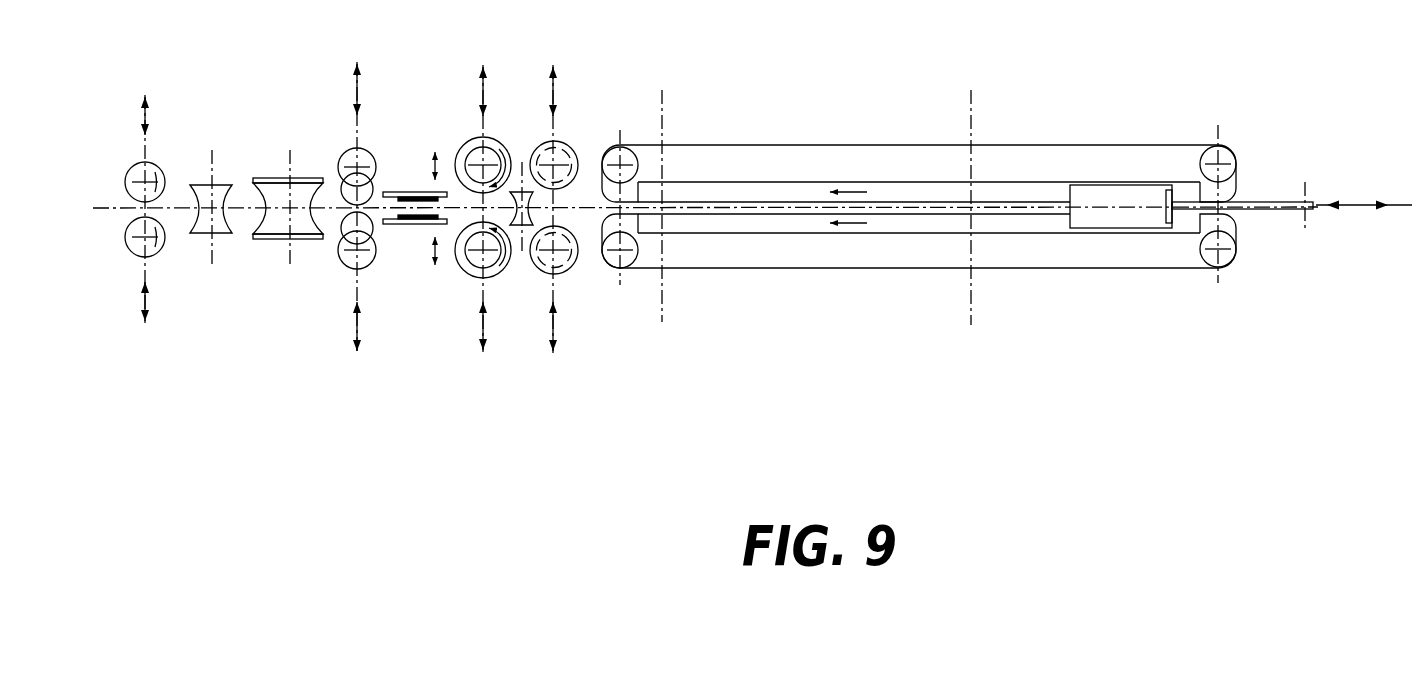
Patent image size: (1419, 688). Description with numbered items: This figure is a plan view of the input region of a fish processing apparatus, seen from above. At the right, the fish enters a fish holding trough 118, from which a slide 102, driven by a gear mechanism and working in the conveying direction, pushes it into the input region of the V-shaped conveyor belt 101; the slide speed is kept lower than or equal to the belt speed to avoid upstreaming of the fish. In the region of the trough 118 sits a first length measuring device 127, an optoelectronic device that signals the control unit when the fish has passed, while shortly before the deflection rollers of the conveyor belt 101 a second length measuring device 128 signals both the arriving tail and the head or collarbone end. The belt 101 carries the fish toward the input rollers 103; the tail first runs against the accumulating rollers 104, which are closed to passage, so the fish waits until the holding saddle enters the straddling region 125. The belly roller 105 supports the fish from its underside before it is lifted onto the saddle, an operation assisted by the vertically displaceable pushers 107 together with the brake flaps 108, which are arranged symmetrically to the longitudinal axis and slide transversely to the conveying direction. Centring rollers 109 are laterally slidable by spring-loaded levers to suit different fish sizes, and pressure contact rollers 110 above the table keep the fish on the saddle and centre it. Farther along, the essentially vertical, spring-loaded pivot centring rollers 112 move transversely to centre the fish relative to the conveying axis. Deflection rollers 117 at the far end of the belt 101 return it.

The conveyor belt 101 is at (1062, 122).
The slide 102 is at (1283, 210).
The input rollers 103 is at (462, 147).
The accumulating rollers 104 is at (557, 142).
The belly roller 105 is at (522, 225).
The pushers 107 is at (393, 192).
The brake flaps 108 is at (412, 192).
The centring rollers 109 is at (347, 163).
The pressure contact rollers 110 is at (273, 227).
The pivot centring rollers 112 is at (147, 168).
The belt deflection rollers 117 is at (1232, 155).
The fish holding trough 118 is at (1128, 220).
The straddling region 125 is at (639, 311).
The first length measuring device 127 is at (970, 103).
The second length measuring device 128 is at (662, 105).